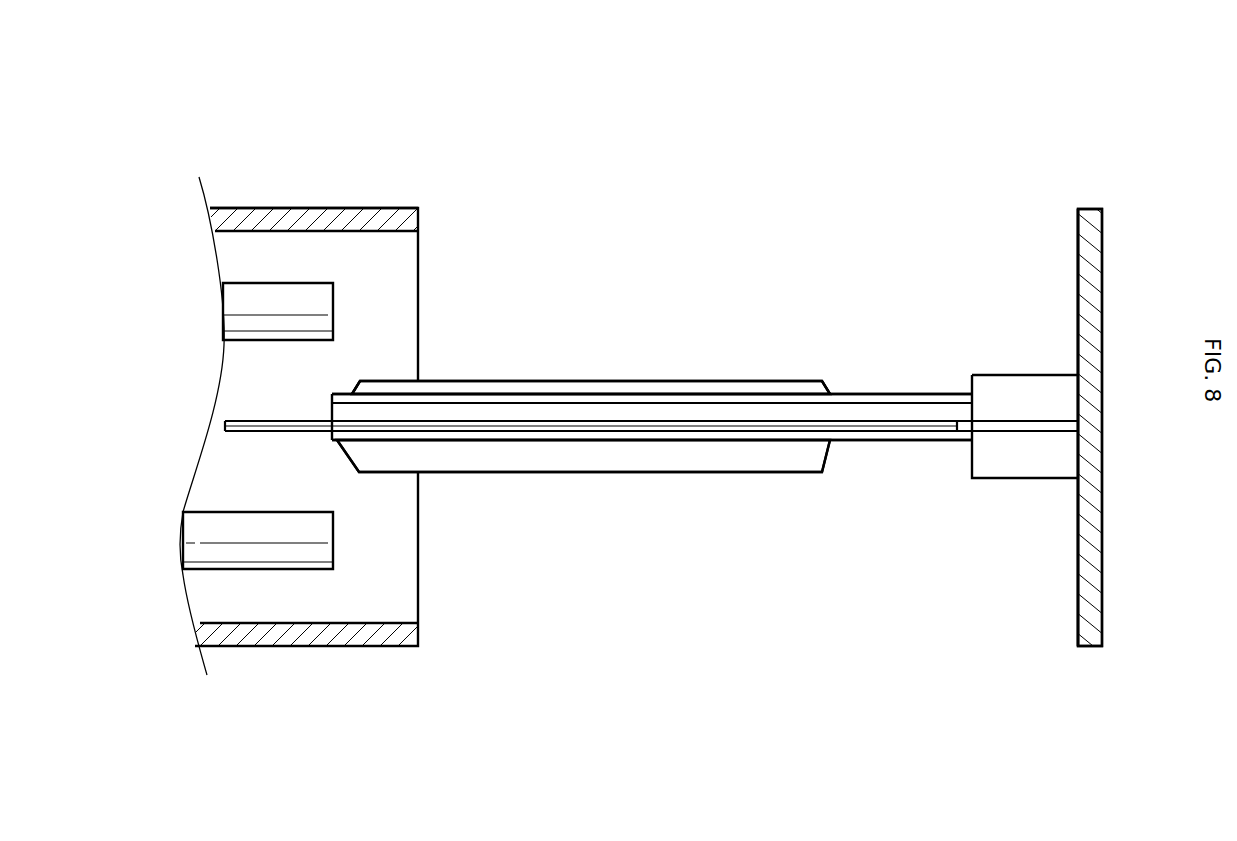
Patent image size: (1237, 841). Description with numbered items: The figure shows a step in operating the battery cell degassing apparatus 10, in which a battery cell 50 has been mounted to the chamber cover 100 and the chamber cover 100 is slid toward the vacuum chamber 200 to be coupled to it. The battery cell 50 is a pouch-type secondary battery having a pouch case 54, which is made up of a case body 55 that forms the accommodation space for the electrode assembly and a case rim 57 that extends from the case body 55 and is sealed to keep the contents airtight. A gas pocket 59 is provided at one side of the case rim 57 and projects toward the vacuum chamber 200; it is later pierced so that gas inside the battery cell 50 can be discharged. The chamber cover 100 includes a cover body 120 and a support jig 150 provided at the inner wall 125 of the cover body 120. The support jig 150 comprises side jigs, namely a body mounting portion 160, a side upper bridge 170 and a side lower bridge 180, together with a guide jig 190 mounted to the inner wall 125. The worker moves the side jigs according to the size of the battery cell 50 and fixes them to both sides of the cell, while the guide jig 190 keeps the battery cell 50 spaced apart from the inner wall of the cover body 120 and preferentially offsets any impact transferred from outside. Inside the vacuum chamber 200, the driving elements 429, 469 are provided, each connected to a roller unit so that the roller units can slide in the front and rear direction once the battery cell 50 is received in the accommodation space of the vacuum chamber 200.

The battery cell degassing apparatus 10 is at (720, 112).
The battery cell 50 is at (488, 356).
The pouch case 54 is at (627, 326).
The case body 55 is at (612, 386).
The case rim 57 is at (563, 420).
The gas pocket 59 is at (278, 420).
The chamber cover 100 is at (1108, 192).
The cover body 120 is at (1100, 251).
The inner wall 125 is at (1078, 237).
The support jig 150 is at (853, 316).
The body mounting portion 160 is at (1018, 374).
The side upper bridge 170 is at (733, 397).
The side lower bridge 180 is at (737, 436).
The guide jig 190 is at (1053, 427).
The vacuum chamber 200 is at (366, 208).
The driving element 429 is at (265, 303).
The driving element 469 is at (265, 548).